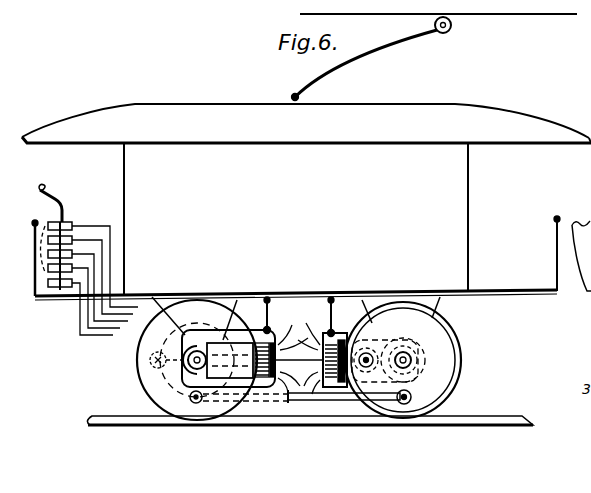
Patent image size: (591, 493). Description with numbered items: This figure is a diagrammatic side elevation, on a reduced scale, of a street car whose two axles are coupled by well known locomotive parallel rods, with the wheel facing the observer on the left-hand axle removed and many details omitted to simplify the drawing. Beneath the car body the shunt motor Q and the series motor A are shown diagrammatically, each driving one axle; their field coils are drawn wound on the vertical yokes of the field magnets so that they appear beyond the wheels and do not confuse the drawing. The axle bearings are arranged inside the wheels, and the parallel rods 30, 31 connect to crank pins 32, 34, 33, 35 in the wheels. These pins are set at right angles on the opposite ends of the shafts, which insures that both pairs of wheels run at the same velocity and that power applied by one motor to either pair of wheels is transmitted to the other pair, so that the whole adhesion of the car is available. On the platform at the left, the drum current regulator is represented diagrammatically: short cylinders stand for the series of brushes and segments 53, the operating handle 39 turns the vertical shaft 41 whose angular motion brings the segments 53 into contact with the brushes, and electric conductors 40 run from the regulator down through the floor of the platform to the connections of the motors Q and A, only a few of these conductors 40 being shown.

The operating handle 39 is at (45, 194).
The vertical shaft 41 is at (65, 214).
The segments 53 is at (33, 258).
The electric conductors 40 is at (105, 280).
The crank pin 35 is at (189, 360).
The crank pin 34 is at (227, 403).
The shunt motor Q is at (213, 342).
The series motor A is at (381, 342).
The parallel rod 31 is at (299, 358).
The crank pin 33 is at (403, 360).
The crank pin 32 is at (416, 393).
The parallel rod 30 is at (344, 404).